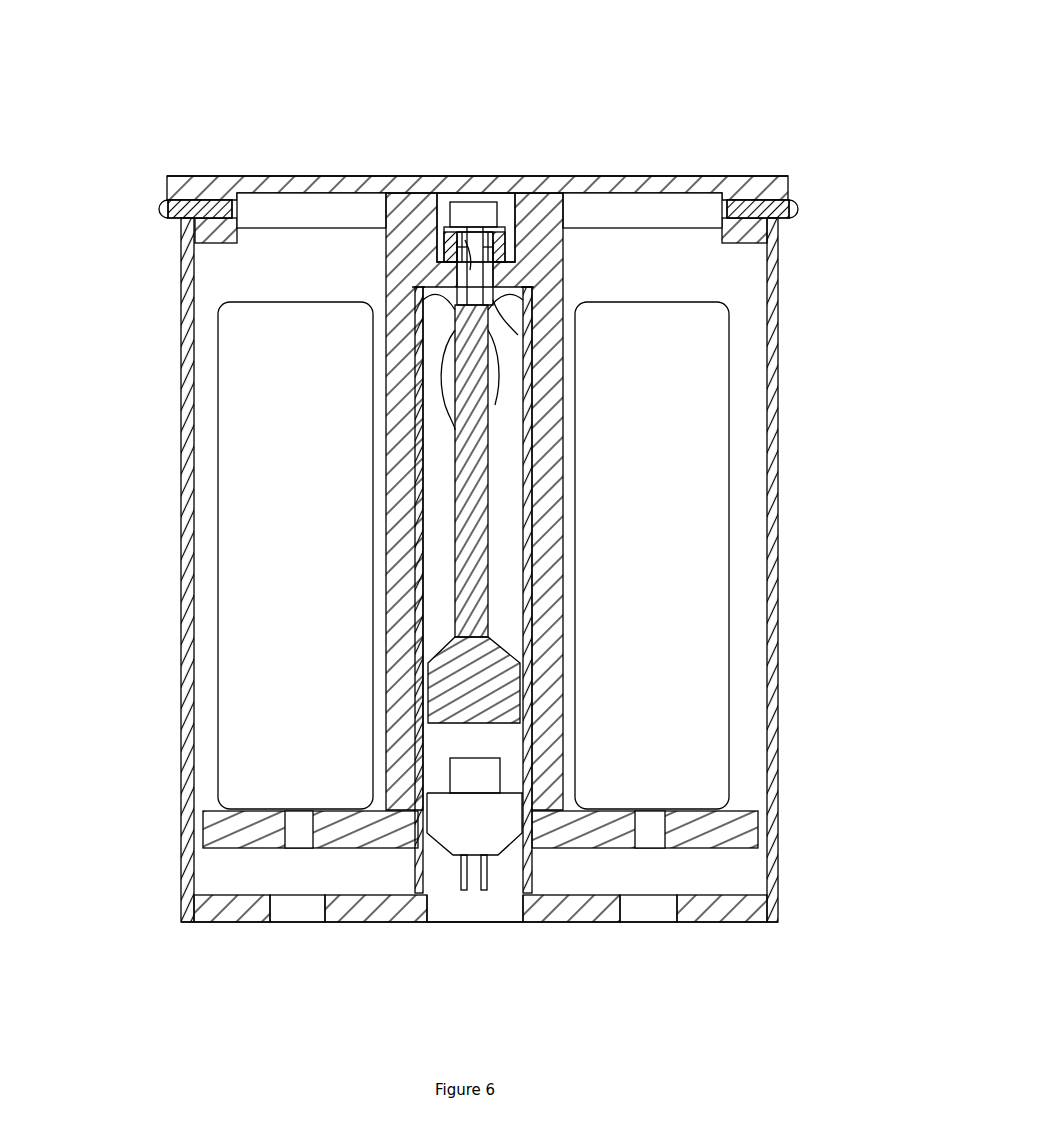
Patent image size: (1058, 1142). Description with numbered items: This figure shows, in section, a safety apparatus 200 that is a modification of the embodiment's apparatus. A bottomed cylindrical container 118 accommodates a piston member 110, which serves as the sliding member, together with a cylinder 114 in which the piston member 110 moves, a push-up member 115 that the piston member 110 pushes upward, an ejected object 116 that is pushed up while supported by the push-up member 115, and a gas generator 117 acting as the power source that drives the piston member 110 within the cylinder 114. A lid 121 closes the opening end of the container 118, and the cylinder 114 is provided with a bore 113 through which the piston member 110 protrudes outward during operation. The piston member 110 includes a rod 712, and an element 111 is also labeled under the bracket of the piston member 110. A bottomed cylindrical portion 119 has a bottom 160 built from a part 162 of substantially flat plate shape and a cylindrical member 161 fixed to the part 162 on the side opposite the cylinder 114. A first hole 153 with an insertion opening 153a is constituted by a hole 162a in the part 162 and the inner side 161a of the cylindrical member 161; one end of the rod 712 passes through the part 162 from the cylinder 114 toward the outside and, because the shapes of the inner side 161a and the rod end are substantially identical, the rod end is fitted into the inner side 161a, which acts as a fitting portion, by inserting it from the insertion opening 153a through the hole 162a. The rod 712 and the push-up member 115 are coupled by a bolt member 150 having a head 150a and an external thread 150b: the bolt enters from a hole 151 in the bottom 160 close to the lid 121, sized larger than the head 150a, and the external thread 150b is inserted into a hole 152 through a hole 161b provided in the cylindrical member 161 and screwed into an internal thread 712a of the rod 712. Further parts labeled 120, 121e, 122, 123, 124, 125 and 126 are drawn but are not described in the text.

The safety apparatus 200 is at (360, 30).
The piston member 110 is at (857, 569).
The heater base 111 is at (535, 692).
The bore 113 is at (460, 345).
The cylinder 114 is at (500, 605).
The push-up member 115 is at (442, 200).
The ejected object 116 is at (707, 408).
The gas generator 117 is at (478, 912).
The container 118 is at (772, 462).
The bottomed cylindrical portion 119 is at (400, 200).
The bottom plate 120 is at (357, 835).
The lid 121 is at (255, 176).
The cover recess 121e is at (258, 205).
The seal ring 122 is at (168, 208).
The stem 123 is at (448, 280).
The bottom opening 124 is at (292, 910).
The support plate 125 is at (186, 857).
The support plate opening 126 is at (298, 838).
The bolt member 150 is at (90, 237).
The head 150a is at (445, 235).
The external thread 150b is at (450, 252).
The hole 151 is at (445, 235).
The hole 152 is at (470, 210).
The first hole 153 is at (440, 305).
The insertion opening 153a is at (510, 274).
The bottom 160 is at (707, 117).
The cylindrical member 161 is at (500, 240).
The inner side 161a is at (500, 255).
The hole 161b is at (470, 260).
The part 162 is at (495, 262).
The hole 162a is at (488, 245).
The rod 712 is at (535, 642).
The internal thread 712a is at (528, 338).